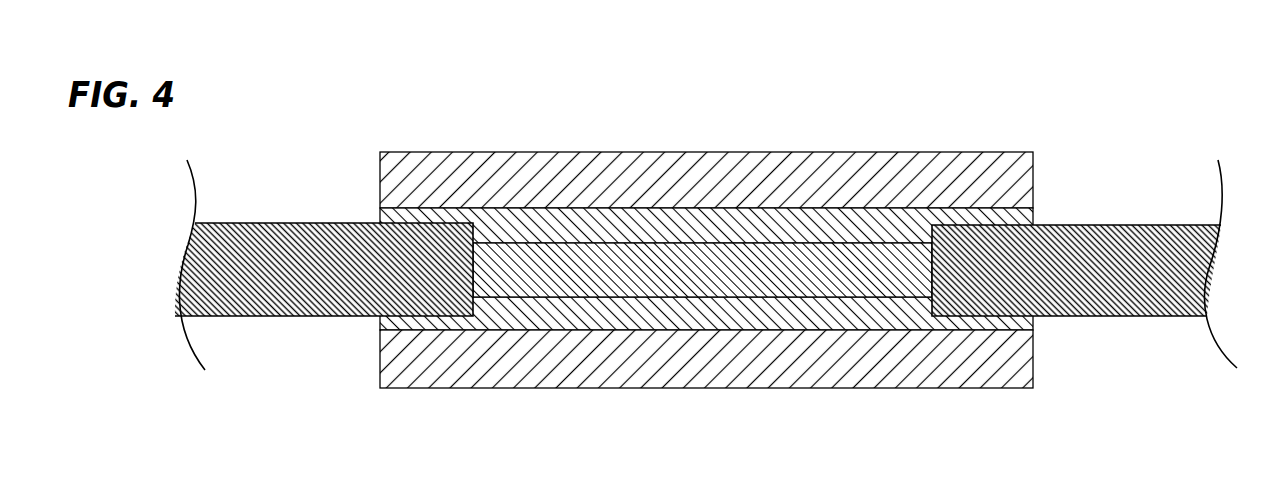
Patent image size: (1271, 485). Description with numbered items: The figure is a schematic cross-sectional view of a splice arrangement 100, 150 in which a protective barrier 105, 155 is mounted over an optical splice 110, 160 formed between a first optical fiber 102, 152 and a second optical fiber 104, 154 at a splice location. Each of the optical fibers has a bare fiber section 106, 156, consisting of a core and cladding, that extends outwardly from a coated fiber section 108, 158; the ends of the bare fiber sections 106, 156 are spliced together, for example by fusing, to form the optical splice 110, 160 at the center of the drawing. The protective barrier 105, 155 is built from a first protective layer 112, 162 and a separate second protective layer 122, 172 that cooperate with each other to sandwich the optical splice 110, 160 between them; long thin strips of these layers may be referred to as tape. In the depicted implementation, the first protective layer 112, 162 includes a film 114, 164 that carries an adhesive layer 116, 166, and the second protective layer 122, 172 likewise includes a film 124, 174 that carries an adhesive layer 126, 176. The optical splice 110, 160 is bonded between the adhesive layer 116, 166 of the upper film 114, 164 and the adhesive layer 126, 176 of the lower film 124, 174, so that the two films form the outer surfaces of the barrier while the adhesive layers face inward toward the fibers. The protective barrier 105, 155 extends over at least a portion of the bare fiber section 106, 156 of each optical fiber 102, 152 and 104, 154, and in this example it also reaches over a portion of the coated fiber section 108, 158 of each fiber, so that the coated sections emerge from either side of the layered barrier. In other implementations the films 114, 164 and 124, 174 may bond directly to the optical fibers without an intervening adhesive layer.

The splice arrangement 100 is at (706, 257).
The splice arrangement 150 is at (1057, 156).
The first optical fiber 102 is at (324, 272).
The first optical fiber 152 is at (273, 223).
The second optical fiber 104 is at (1084, 260).
The second optical fiber 154 is at (1148, 225).
The protective barrier 105 is at (725, 126).
The protective barrier 155 is at (508, 150).
The bare fiber section 106 is at (706, 378).
The bare fiber section 156 is at (532, 297).
The coated fiber section 108 is at (324, 273).
The coated fiber section 158 is at (290, 317).
The optical splice 110 is at (702, 184).
The optical splice 160 is at (704, 262).
The first protective layer 112 is at (725, 126).
The first protective layer 162 is at (637, 150).
The film 114 is at (725, 126).
The film 164 is at (992, 158).
The adhesive layer 116 is at (706, 175).
The adhesive layer 166 is at (842, 230).
The second protective layer 122 is at (752, 404).
The second protective layer 172 is at (755, 388).
The film 124 is at (752, 387).
The film 174 is at (985, 388).
The adhesive layer 126 is at (706, 378).
The adhesive layer 176 is at (610, 330).